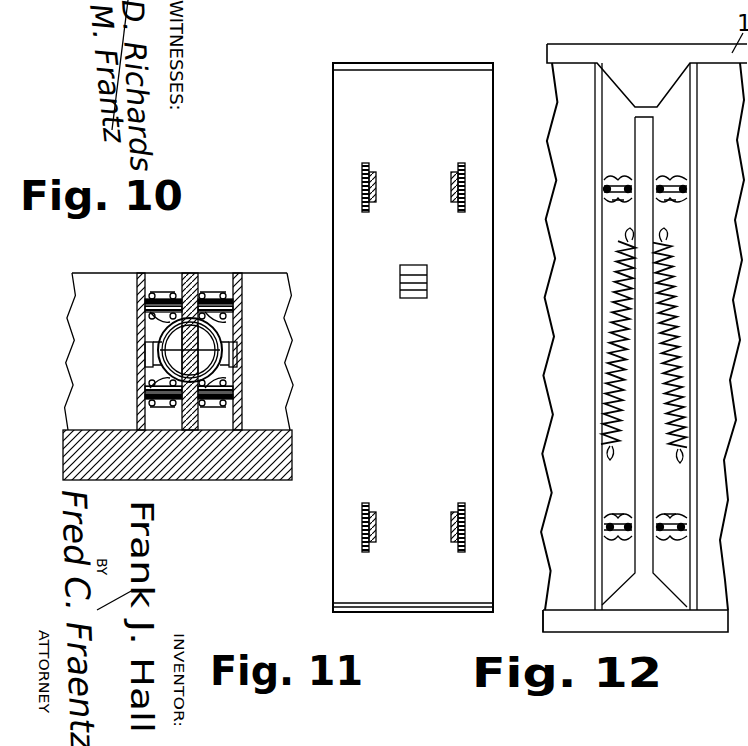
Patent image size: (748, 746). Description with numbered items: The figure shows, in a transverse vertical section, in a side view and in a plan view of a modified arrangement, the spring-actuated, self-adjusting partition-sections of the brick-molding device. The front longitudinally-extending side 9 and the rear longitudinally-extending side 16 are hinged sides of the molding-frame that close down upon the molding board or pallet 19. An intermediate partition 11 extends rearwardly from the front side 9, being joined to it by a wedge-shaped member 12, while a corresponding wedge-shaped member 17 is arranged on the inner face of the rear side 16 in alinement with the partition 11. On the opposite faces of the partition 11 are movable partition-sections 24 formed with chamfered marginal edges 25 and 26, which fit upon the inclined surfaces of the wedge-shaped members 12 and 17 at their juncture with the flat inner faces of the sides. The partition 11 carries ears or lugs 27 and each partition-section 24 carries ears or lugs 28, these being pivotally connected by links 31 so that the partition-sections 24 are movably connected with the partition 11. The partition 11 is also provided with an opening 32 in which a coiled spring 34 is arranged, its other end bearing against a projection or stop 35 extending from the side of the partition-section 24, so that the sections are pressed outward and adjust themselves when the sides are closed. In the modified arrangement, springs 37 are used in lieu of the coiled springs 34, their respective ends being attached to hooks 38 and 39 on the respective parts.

In FIG. 12, the front longitudinally-extending side 9 is at (550, 622).
In FIG. 10, the intermediate partition 11 is at (184, 277).
In FIG. 12, the intermediate partition 11 is at (747, 103).
In FIG. 12, the wedge-shaped member 12 is at (663, 605).
In FIG. 10, the rear longitudinally-extending side 16 is at (292, 290).
In FIG. 12, the rear longitudinally-extending side 16 is at (717, 336).
In FIG. 10, the wedge-shaped member 17 is at (150, 277).
In FIG. 12, the wedge-shaped member 17 is at (645, 58).
In FIG. 10, the molding board or pallet 19 is at (277, 450).
In FIG. 10, the movable partition-section 24 is at (247, 277).
In FIG. 11, the movable partition-section 24 is at (338, 110).
In FIG. 12, the movable partition-section 24 is at (602, 130).
In FIG. 11, the chamfered marginal edge 25 is at (413, 613).
In FIG. 12, the chamfered marginal edge 25 is at (602, 603).
In FIG. 11, the chamfered marginal edge 26 is at (427, 63).
In FIG. 12, the chamfered marginal edge 26 is at (600, 63).
In FIG. 10, the ear or lug 27 is at (163, 318).
In FIG. 12, the ear or lug 27 is at (627, 180).
In FIG. 10, the ear or lug 28 is at (145, 302).
In FIG. 11, the ear or lug 28 is at (455, 165).
In FIG. 12, the ear or lug 28 is at (607, 183).
In FIG. 10, the link 31 is at (157, 297).
In FIG. 12, the link 31 is at (649, 358).
In FIG. 10, the opening 32 is at (187, 358).
In FIG. 10, the coiled spring 34 is at (210, 357).
In FIG. 10, the projection or stop 35 is at (147, 355).
In FIG. 11, the projection or stop 35 is at (413, 268).
In FIG. 12, the spring 37 is at (613, 353).
In FIG. 12, the hook 38 is at (630, 243).
In FIG. 12, the hook 39 is at (607, 450).